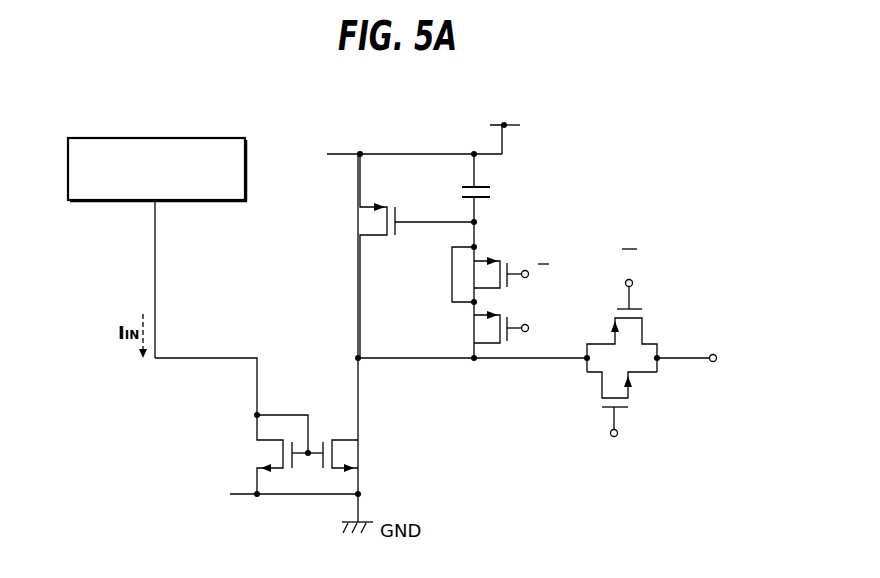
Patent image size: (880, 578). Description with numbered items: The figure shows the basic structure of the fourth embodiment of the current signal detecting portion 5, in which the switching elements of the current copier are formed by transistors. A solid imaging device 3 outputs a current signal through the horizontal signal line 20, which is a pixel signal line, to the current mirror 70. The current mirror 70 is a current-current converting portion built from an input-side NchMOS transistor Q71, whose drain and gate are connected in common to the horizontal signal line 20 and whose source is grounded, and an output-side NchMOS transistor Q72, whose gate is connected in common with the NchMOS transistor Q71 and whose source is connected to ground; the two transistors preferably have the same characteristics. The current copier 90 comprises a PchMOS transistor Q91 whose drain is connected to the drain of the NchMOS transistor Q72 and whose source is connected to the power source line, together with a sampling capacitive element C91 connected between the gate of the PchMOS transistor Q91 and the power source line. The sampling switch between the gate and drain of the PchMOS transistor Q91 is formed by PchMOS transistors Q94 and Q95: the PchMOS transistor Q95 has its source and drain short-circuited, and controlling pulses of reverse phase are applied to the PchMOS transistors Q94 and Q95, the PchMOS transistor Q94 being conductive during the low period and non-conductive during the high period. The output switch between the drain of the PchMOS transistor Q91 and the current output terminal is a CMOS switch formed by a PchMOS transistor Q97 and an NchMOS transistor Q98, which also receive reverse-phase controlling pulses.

The solid imaging device 3 is at (68, 172).
The horizontal signal line 20 is at (155, 257).
The current mirror 70 is at (311, 478).
The NchMOS transistor Q71 is at (262, 456).
The NchMOS transistor Q72 is at (378, 455).
The current copier 90 is at (429, 236).
The PchMOS transistor Q91 is at (360, 222).
The capacitive element C91 is at (512, 193).
The current signal detecting portion 5 is at (557, 311).
The PchMOS transistor Q94 is at (472, 330).
The PchMOS transistor Q95 is at (506, 256).
The PchMOS transistor Q97 is at (667, 331).
The NchMOS transistor Q98 is at (655, 389).